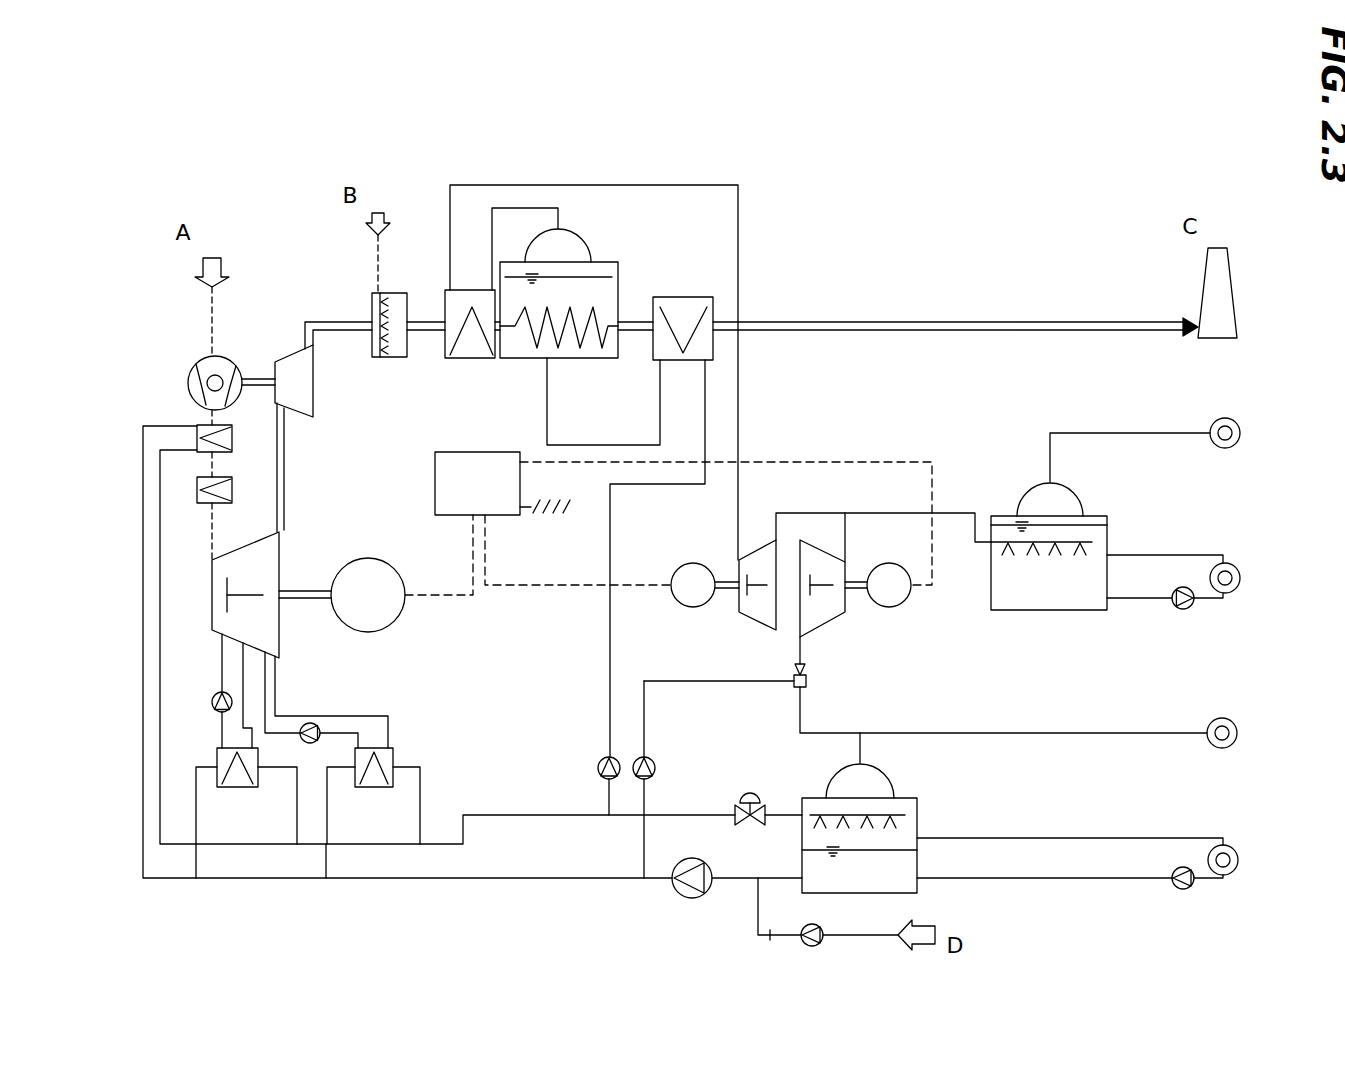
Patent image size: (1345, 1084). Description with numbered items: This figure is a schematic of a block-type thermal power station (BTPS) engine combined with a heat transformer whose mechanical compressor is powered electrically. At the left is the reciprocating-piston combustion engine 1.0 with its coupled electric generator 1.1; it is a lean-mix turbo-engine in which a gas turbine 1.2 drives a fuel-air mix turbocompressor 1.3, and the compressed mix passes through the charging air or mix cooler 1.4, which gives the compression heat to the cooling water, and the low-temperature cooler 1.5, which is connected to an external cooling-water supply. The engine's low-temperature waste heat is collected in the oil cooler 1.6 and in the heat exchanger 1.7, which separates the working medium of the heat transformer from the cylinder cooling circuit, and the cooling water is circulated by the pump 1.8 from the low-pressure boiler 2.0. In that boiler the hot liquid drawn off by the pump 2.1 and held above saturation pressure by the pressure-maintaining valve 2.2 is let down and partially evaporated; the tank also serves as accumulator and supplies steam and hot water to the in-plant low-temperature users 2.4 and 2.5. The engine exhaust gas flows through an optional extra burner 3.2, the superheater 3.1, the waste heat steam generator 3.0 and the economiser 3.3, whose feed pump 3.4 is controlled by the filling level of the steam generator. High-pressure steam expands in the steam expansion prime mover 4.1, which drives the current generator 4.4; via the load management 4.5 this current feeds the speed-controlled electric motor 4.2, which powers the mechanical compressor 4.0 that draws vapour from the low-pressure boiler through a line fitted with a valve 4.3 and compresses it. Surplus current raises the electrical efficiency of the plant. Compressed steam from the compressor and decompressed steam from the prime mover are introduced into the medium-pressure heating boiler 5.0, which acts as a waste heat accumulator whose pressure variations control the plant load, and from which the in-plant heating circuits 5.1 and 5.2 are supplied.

The BTPS engine 1.0 is at (265, 595).
The electric generator 1.1 is at (384, 587).
The gas turbine 1.2 is at (277, 380).
The fuel-air mix turbocompressor 1.3 is at (200, 376).
The charging air or mix cooler 1.4 is at (229, 438).
The low-temperature cooler 1.5 is at (229, 490).
The oil cooler 1.6 is at (239, 783).
The heat exchanger 1.7 is at (374, 783).
The pump 1.8 is at (685, 890).
The low-pressure boiler 2.0 is at (871, 826).
The pump 2.1 is at (817, 948).
The pressure-maintaining valve 2.2 is at (753, 792).
The in-plant low-temperature user 2.4 is at (1227, 846).
The in-plant low-temperature user 2.5 is at (1226, 723).
The waste heat steam generator 3.0 is at (559, 309).
The superheater 3.1 is at (470, 340).
The extra burner 3.2 is at (390, 341).
The economiser 3.3 is at (683, 342).
The feed pump 3.4 is at (589, 768).
The mechanical compressor 4.0 is at (822, 597).
The steam expansion prime mover 4.1 is at (758, 597).
The electric motor 4.2 is at (889, 609).
The throttle valve 4.3 is at (778, 685).
The current generator 4.4 is at (693, 609).
The load management 4.5 is at (502, 491).
The medium-pressure heating boiler 5.0 is at (1046, 546).
The in-plant heating circuit 5.1 is at (1209, 569).
The in-plant heating circuit 5.2 is at (1228, 424).